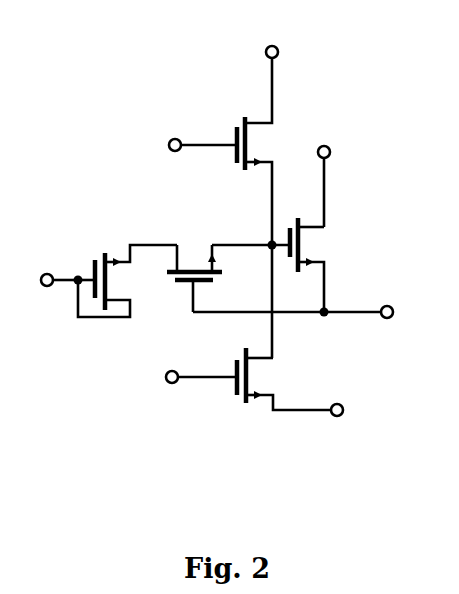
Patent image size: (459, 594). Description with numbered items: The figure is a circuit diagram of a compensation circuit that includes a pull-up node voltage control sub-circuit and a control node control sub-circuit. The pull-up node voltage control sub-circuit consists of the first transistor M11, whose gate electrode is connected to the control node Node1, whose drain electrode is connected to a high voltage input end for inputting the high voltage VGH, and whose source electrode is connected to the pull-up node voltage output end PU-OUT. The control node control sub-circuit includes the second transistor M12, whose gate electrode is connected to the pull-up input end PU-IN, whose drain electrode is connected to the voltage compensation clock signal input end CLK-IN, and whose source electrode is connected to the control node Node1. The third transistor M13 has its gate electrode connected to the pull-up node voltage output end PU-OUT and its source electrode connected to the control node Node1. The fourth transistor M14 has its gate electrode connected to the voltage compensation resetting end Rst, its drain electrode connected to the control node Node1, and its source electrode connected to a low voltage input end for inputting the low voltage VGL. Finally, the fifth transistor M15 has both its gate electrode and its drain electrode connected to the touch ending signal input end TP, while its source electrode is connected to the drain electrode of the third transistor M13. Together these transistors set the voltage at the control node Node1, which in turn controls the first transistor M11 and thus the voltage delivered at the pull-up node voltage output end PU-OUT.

The first transistor M11 is at (327, 265).
The second transistor M12 is at (239, 169).
The third transistor M13 is at (194, 265).
The fourth transistor M14 is at (270, 391).
The fifth transistor M15 is at (123, 271).
The control node Node1 is at (251, 265).
The voltage compensation clock signal input end CLK-IN is at (269, 74).
The pull-up input end PU-IN is at (177, 146).
The high voltage VGH is at (325, 175).
The pull-up node voltage output end PU-OUT is at (302, 300).
The touch ending signal input end TP is at (55, 291).
The voltage compensation resetting end Rst is at (185, 378).
The low voltage VGL is at (332, 423).